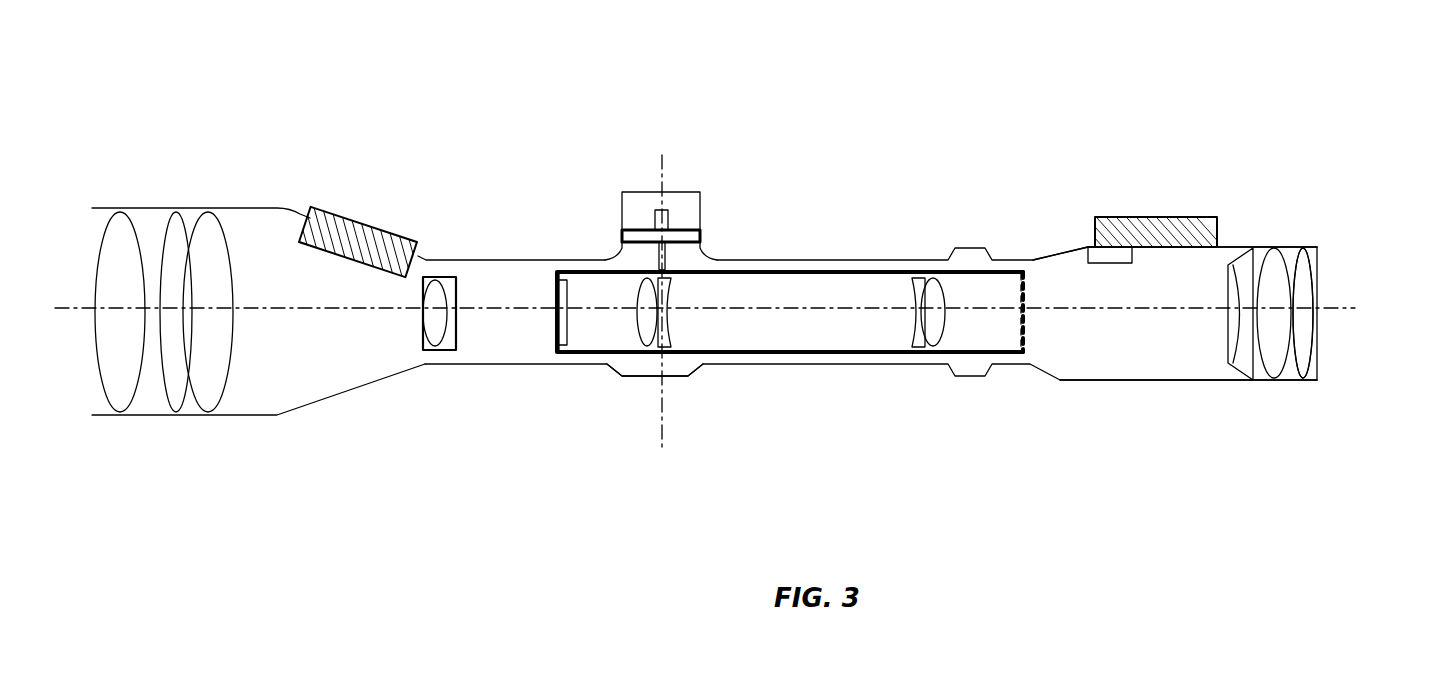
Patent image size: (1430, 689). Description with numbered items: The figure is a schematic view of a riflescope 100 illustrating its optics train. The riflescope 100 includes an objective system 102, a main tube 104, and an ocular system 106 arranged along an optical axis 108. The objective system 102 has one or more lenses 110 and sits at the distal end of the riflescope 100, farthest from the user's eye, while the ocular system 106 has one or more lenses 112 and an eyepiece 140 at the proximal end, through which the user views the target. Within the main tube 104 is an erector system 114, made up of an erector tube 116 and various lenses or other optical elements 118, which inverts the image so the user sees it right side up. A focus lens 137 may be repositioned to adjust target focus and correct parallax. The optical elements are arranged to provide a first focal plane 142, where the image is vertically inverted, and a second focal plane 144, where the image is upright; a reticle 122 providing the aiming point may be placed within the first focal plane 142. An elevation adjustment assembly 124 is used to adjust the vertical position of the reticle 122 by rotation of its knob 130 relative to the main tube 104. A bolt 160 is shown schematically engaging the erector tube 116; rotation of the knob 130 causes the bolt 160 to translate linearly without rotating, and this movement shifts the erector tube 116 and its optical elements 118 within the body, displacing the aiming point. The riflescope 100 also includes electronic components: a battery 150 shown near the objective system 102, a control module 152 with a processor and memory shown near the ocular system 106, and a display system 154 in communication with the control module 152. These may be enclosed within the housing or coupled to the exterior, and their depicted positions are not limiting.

The riflescope 100 is at (802, 126).
The objective system 102 is at (212, 440).
The main tube 104 is at (835, 258).
The ocular system 106 is at (1318, 400).
The optical axis 108 is at (1327, 305).
The lenses 110 is at (252, 236).
The lenses 112 is at (1203, 343).
The erector system 114 is at (700, 372).
The erector tube 116 is at (765, 353).
The optical elements 118 is at (632, 352).
The reticle 122 is at (517, 272).
The elevation adjustment assembly 124 is at (697, 170).
The knob 130 is at (622, 205).
The focus lens 137 is at (455, 350).
The eyepiece 140 is at (1330, 325).
The first focal plane 142 is at (552, 302).
The second focal plane 144 is at (1028, 340).
The battery 150 is at (360, 217).
The control module 152 is at (1137, 217).
The display system 154 is at (1048, 242).
The bolt 160 is at (668, 217).